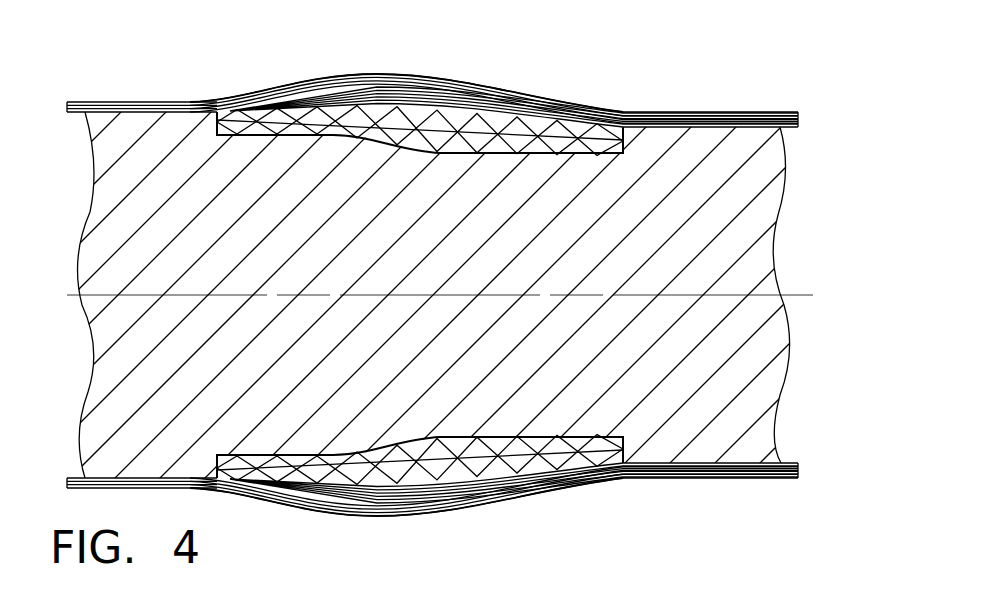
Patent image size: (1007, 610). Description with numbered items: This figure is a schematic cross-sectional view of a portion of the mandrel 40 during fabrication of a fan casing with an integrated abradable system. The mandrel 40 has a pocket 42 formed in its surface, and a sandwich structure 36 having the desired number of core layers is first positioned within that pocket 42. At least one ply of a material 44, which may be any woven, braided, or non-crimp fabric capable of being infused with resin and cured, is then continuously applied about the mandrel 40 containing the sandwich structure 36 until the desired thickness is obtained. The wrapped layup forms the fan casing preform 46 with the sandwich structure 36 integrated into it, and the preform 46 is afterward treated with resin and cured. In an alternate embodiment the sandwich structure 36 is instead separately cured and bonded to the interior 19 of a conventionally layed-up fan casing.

The interior 19 is at (170, 112).
The sandwich structure 36 is at (640, 150).
The mandrel 40 is at (667, 250).
The pocket 42 is at (217, 165).
The material 44 is at (600, 94).
The fan casing preform 46 is at (238, 88).